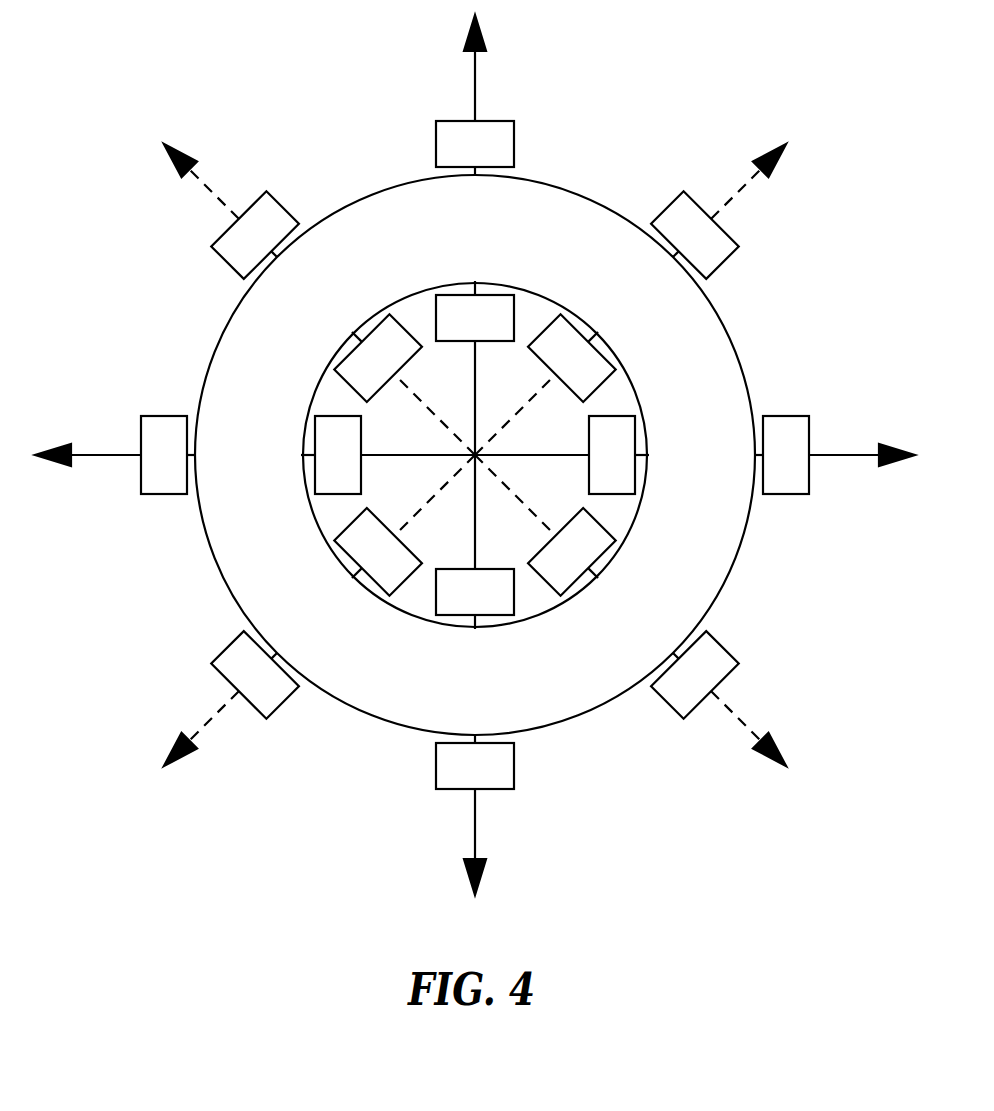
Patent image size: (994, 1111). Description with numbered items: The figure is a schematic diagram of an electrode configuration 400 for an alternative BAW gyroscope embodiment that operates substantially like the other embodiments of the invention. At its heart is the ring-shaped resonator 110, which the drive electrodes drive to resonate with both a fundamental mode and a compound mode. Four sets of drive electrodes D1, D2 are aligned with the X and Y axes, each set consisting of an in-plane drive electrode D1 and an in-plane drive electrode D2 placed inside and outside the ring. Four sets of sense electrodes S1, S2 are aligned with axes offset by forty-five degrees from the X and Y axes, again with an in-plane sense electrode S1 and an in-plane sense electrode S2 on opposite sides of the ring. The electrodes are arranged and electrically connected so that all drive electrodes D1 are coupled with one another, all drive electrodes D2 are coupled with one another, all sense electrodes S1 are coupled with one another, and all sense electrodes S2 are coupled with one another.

The ring-shaped resonator 110 is at (710, 330).
The electrode configuration 400 is at (475, 452).
The drive electrode D1 is at (475, 455).
The drive electrode D2 is at (475, 455).
The sense electrode S1 is at (475, 455).
The sense electrode S2 is at (475, 455).